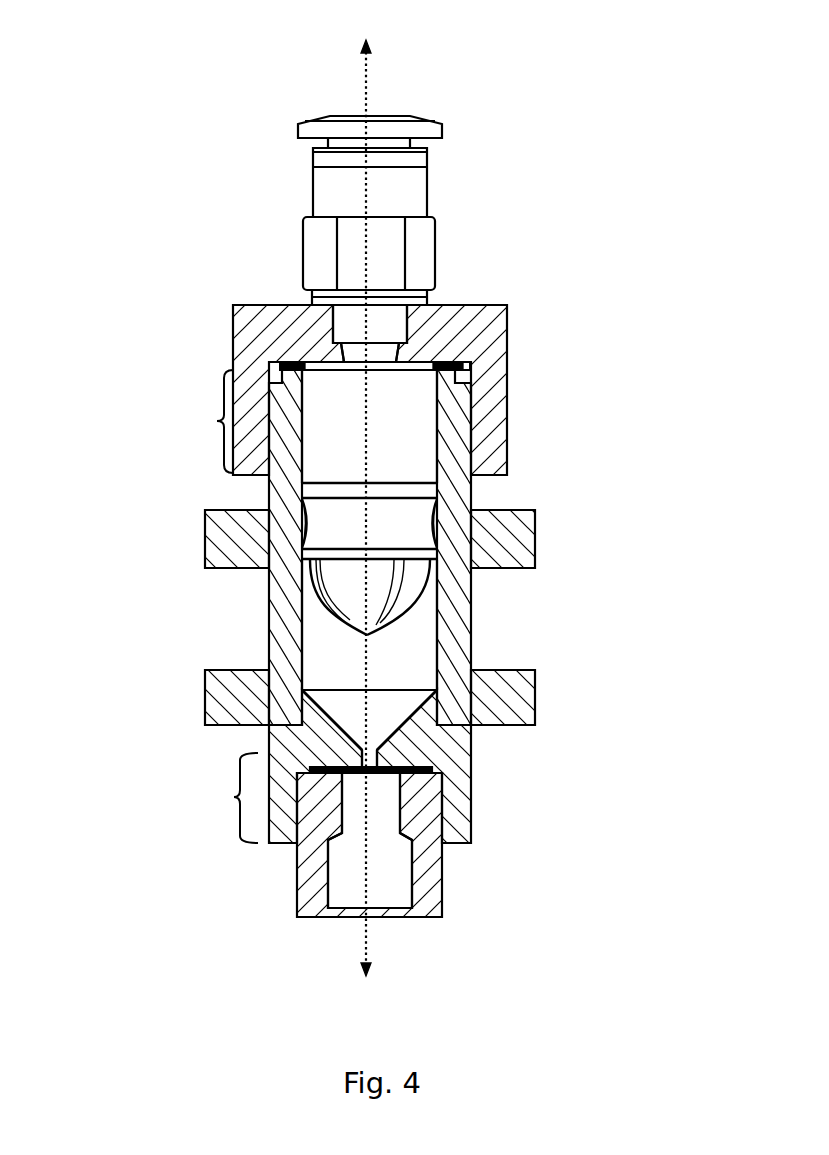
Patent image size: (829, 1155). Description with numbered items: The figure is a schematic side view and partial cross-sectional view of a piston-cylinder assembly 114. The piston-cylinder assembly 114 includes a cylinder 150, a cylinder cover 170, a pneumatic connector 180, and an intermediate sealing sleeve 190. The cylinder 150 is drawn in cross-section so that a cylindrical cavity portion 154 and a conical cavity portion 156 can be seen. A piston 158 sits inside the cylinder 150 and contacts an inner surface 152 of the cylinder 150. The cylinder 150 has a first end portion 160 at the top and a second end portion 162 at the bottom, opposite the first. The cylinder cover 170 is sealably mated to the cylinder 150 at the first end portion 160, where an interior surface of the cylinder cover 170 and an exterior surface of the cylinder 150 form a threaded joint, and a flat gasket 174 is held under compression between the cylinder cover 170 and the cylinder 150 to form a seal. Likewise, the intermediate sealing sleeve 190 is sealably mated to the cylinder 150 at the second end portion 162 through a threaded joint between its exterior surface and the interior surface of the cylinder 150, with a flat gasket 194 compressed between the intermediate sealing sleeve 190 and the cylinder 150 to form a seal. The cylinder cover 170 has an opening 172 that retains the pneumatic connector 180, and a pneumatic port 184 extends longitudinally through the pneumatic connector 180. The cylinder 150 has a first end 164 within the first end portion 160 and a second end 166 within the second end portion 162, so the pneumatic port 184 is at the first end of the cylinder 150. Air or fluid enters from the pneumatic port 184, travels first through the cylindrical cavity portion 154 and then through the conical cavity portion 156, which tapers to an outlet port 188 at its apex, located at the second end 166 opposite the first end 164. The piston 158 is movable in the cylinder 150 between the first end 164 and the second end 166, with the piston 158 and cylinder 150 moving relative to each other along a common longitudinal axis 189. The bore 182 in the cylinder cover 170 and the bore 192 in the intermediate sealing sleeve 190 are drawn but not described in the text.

The piston-cylinder assembly 114 is at (177, 80).
The common longitudinal axis 189 is at (363, 78).
The pneumatic port 184 is at (393, 112).
The pneumatic connector 180 is at (440, 244).
The cylinder cover 170 is at (506, 330).
The inlet bore 182 is at (355, 318).
The opening 172 is at (345, 352).
The flat gasket 174 is at (457, 365).
The first end portion 160 is at (226, 420).
The first end 164 is at (383, 372).
The cylinder 150 is at (536, 538).
The piston 158 is at (437, 553).
The inner surface 152 is at (440, 657).
The cylindrical cavity portion 154 is at (335, 647).
The conical cavity portion 156 is at (337, 706).
The outlet port 188 is at (367, 742).
The second end 166 is at (353, 757).
The flat gasket 194 is at (403, 775).
The second end portion 162 is at (234, 797).
The intermediate sealing sleeve 190 is at (445, 872).
The outlet bore 192 is at (343, 873).